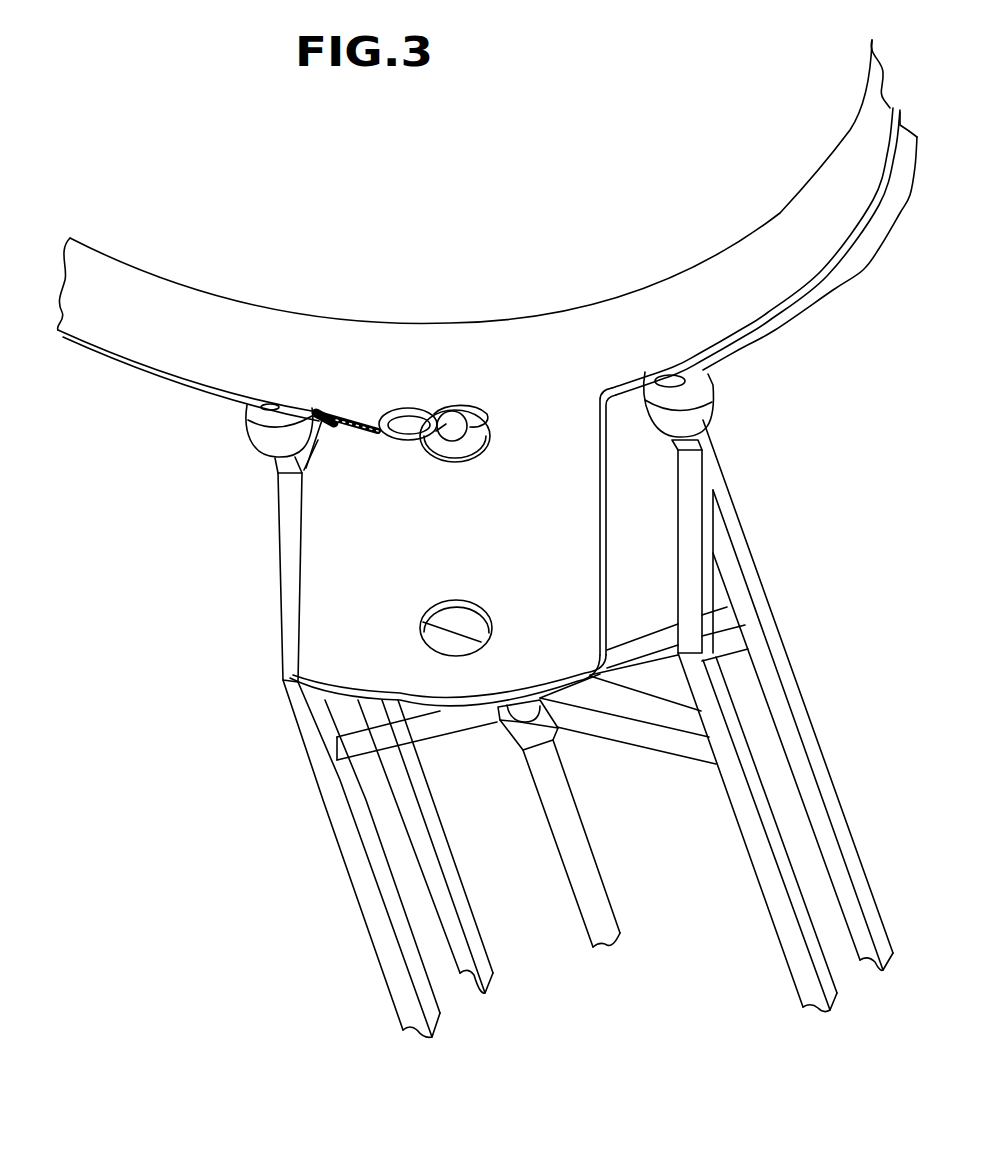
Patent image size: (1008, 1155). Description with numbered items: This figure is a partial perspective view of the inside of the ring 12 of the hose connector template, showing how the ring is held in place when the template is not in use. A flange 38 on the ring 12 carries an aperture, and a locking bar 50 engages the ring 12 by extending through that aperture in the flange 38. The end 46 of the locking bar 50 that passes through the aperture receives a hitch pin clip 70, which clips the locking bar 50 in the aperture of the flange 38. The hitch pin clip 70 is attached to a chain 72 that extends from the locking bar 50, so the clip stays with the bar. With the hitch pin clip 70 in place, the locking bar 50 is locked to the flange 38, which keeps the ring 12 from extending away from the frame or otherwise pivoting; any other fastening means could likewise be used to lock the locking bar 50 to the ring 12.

The ring 12 is at (830, 213).
The flange 38 is at (350, 612).
The end 46 is at (457, 411).
The locking bar 50 is at (590, 853).
The hitch pin clip 70 is at (392, 406).
The chain 72 is at (356, 428).